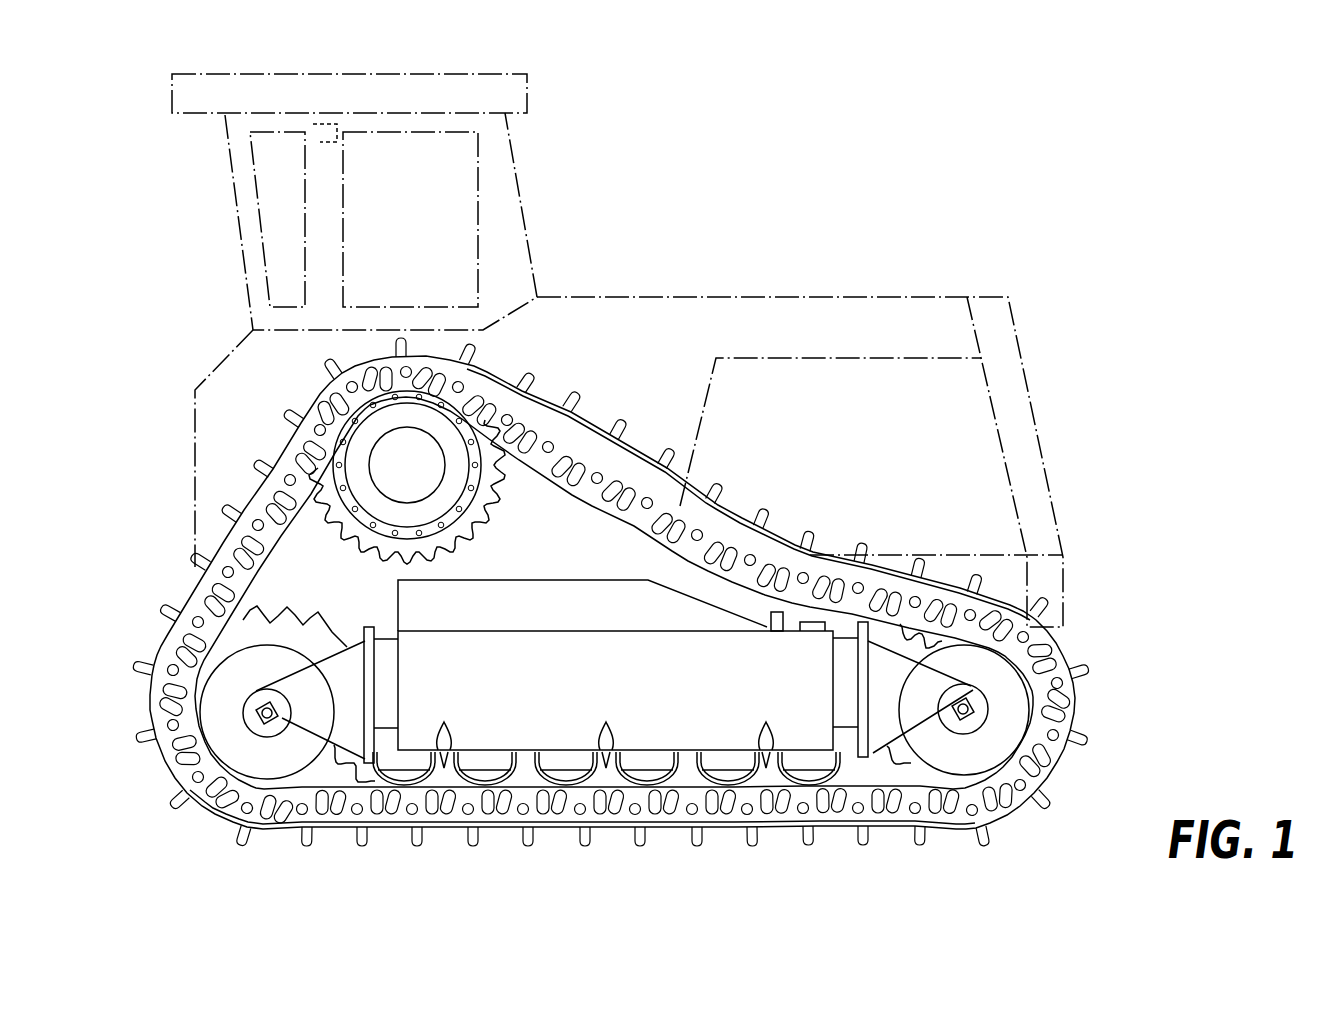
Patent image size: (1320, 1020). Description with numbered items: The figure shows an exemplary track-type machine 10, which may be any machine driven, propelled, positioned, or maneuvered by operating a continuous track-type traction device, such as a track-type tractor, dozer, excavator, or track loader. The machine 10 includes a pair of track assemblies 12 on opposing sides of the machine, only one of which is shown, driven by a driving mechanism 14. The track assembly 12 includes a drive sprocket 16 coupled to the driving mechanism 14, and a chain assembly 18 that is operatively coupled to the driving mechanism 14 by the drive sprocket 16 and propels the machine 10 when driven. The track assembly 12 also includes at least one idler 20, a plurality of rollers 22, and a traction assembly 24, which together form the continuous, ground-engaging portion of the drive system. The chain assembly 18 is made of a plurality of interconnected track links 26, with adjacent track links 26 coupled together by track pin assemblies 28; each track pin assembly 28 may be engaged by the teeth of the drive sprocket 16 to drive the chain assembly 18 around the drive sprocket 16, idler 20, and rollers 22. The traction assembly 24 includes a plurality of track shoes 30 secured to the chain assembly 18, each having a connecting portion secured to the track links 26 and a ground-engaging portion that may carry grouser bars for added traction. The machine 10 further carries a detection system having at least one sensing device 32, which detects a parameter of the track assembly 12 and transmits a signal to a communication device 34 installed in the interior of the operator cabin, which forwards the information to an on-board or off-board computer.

The track-type machine 10 is at (705, 234).
The track assembly 12 is at (678, 612).
The driving mechanism 14 is at (396, 477).
The drive sprocket 16 is at (488, 495).
The chain assembly 18 is at (627, 530).
The idler 20 is at (304, 615).
The rollers 22 is at (766, 738).
The traction assembly 24 is at (978, 838).
The track links 26 is at (712, 840).
The track pin assemblies 28 is at (598, 838).
The track shoes 30 is at (408, 836).
The sensing device 32 is at (778, 590).
The communication device 34 is at (313, 123).